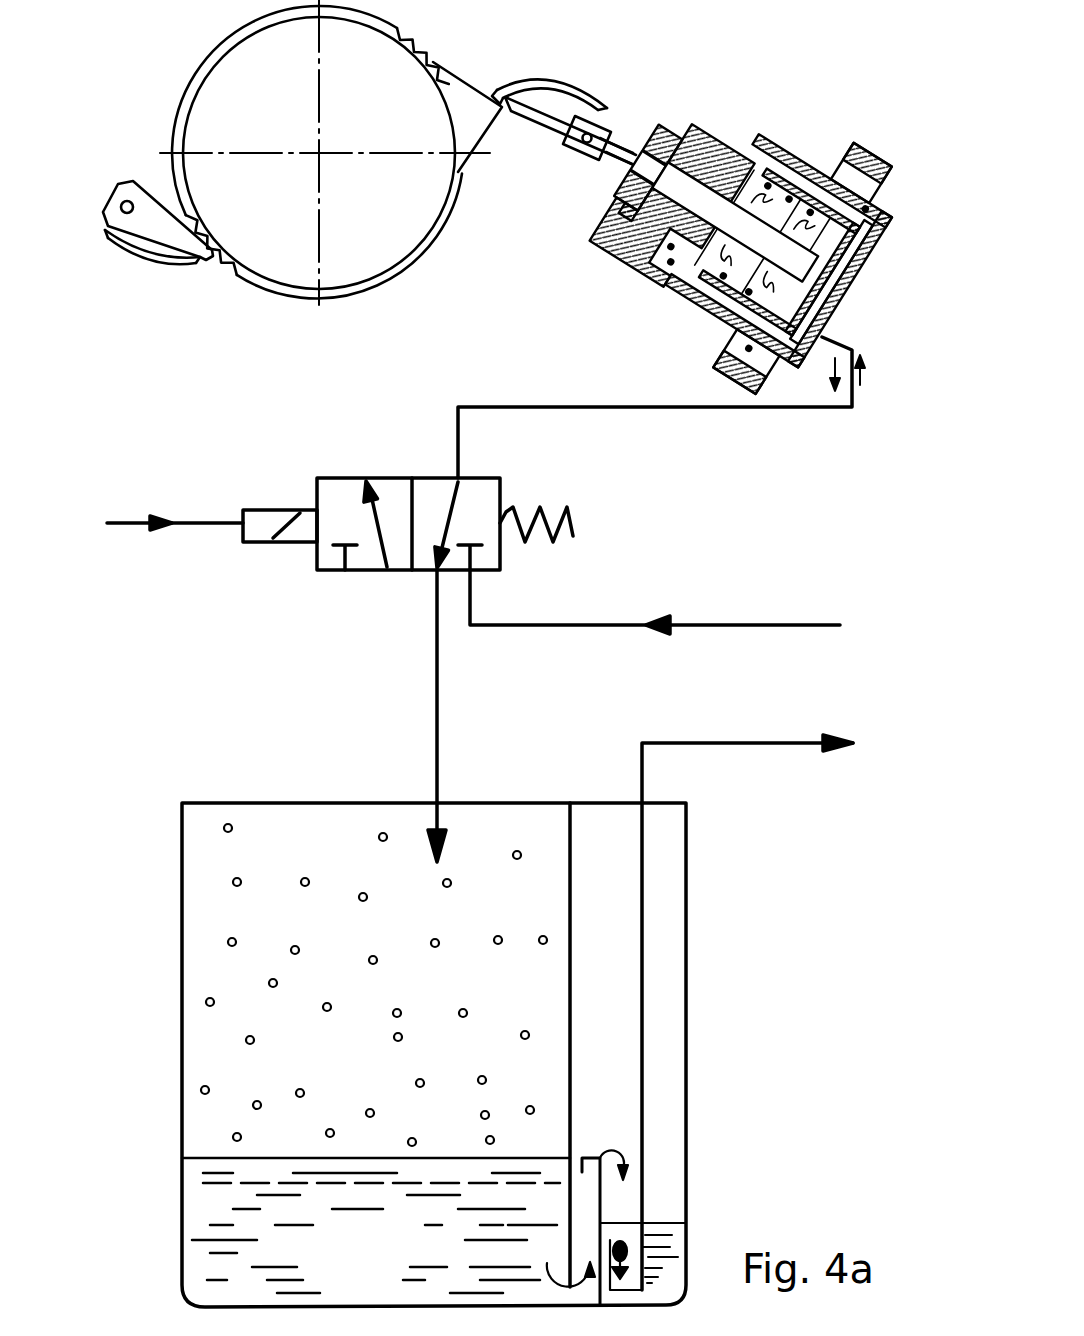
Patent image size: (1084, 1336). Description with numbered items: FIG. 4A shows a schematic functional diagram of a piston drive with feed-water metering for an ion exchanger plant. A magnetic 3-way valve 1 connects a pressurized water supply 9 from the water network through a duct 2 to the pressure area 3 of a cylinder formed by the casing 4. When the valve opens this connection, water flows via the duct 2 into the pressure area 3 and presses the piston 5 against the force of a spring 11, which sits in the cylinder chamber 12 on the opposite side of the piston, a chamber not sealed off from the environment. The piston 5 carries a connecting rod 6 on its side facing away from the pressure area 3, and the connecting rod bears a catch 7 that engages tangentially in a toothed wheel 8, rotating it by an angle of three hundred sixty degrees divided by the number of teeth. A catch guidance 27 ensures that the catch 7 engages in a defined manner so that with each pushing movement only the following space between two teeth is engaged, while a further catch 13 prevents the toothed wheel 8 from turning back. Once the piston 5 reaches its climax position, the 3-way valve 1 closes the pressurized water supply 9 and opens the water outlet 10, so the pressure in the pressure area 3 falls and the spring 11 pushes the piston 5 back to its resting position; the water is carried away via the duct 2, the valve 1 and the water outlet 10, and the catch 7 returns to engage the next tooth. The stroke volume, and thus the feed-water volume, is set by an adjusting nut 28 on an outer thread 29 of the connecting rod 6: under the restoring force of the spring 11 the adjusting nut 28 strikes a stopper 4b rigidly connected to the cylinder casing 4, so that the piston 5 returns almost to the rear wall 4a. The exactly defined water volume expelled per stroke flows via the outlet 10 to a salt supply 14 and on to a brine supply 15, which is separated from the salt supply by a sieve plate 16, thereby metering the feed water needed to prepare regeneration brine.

The 3-way valve 1 is at (412, 478).
The duct 2 is at (515, 405).
The pressure area 3 is at (740, 228).
The casing 4 is at (804, 268).
The rear wall 4a is at (836, 287).
The stopper 4b is at (711, 162).
The piston 5 is at (779, 252).
The connecting rod 6 is at (648, 168).
The catch 7 is at (550, 118).
The toothed wheel 8 is at (225, 82).
The pressurized water supply 9 is at (575, 628).
The water outlet 10 is at (432, 692).
The spring 11 is at (652, 234).
The cylinder chamber 12 is at (725, 227).
The further catch 13 is at (152, 213).
The salt supply 14 is at (233, 943).
The brine supply 15 is at (235, 1253).
The sieve plate 16 is at (200, 1180).
The catch guidance 27 is at (477, 128).
The adjusting nut 28 is at (628, 212).
The outer thread 29 is at (613, 167).